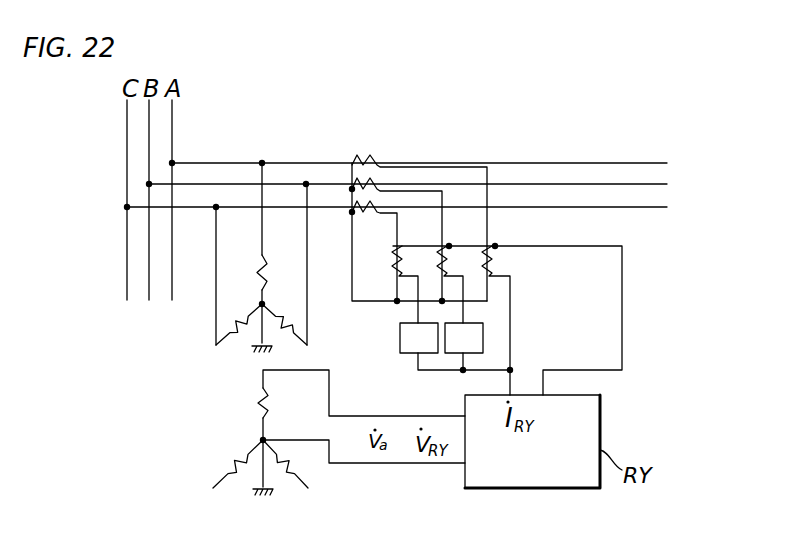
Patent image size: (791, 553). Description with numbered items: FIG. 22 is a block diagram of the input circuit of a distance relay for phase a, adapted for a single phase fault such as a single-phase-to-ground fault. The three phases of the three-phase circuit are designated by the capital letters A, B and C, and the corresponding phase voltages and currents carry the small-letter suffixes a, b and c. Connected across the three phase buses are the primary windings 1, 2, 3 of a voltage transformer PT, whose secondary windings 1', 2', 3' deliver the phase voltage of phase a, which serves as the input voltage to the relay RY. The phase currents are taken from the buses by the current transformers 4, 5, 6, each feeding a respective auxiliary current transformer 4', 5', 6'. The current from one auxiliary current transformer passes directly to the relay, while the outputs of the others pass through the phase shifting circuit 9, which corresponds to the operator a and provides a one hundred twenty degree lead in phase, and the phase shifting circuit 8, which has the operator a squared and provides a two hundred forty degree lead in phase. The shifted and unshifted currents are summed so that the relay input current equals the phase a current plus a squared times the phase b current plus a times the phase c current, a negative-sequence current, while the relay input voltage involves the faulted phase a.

The primary winding of voltage transformer 1 is at (272, 265).
The primary winding of voltage transformer 2 is at (284, 313).
The primary winding of voltage transformer 3 is at (239, 312).
The current transformer 4 is at (419, 213).
The current transformer 5 is at (397, 218).
The current transformer 6 is at (374, 251).
The secondary winding of voltage transformer 1' is at (276, 397).
The secondary winding of voltage transformer 2' is at (299, 474).
The secondary winding of voltage transformer 3' is at (225, 464).
The auxiliary current transformer 4' is at (509, 320).
The auxiliary current transformer 5' is at (452, 270).
The auxiliary current transformer 6' is at (407, 270).
The phase shifting circuit 8 is at (483, 333).
The phase shifting circuit 9 is at (400, 333).